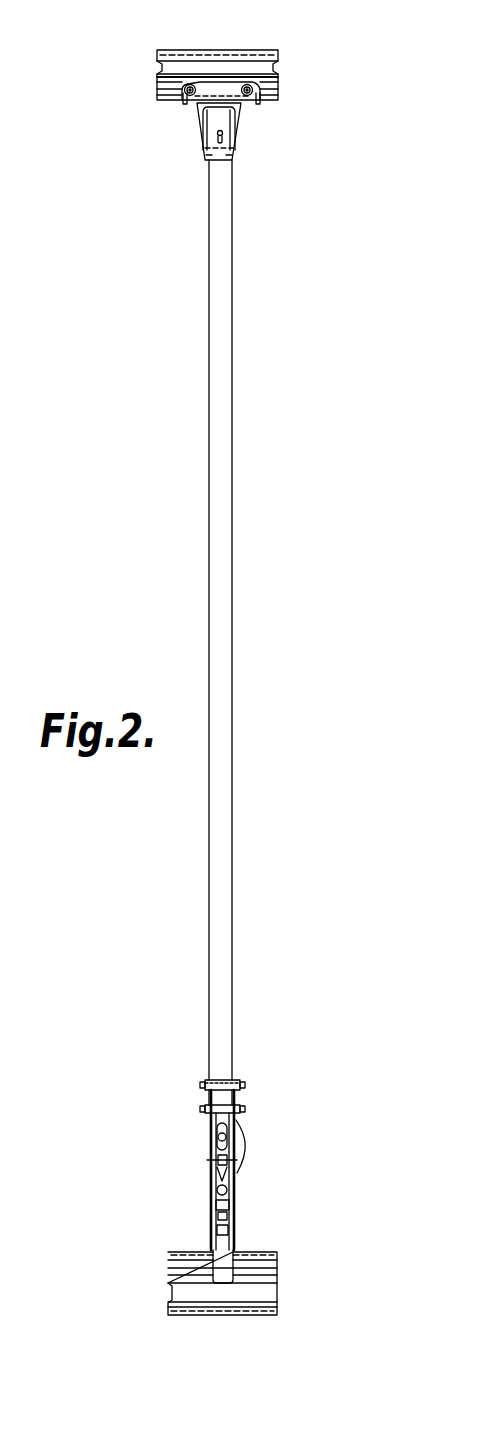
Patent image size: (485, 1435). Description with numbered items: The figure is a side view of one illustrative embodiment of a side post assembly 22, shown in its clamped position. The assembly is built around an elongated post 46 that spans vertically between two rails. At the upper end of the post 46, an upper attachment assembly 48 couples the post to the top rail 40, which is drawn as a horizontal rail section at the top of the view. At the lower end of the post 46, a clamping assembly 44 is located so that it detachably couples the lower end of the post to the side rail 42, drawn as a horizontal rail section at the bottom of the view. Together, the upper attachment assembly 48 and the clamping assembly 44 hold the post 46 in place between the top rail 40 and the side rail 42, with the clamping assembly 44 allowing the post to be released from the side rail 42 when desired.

The side post assembly 22 is at (252, 482).
The top rail 40 is at (250, 56).
The side rail 42 is at (262, 1251).
The clamping assembly 44 is at (253, 1158).
The post 46 is at (212, 530).
The upper attachment assembly 48 is at (255, 127).